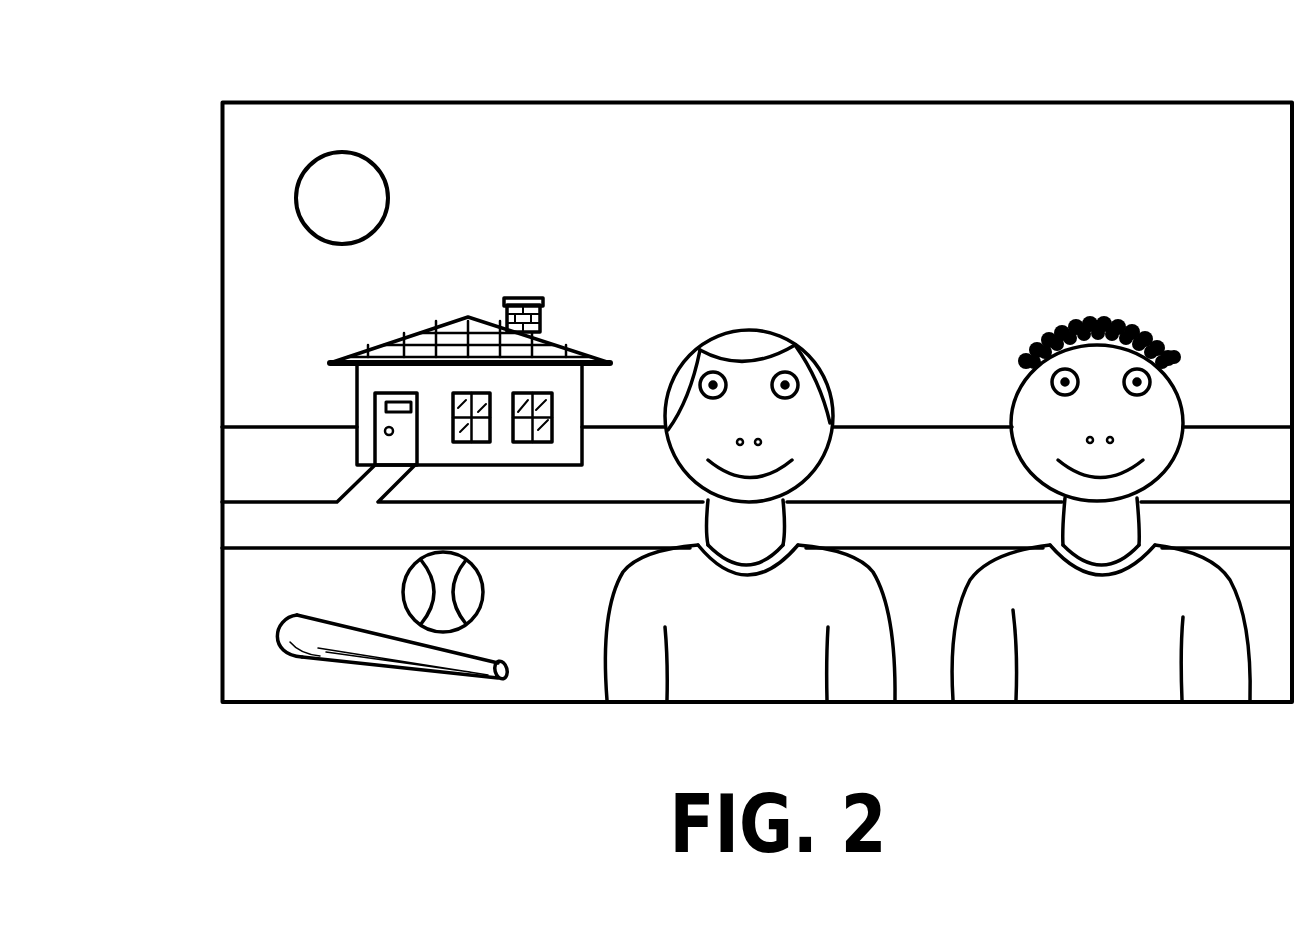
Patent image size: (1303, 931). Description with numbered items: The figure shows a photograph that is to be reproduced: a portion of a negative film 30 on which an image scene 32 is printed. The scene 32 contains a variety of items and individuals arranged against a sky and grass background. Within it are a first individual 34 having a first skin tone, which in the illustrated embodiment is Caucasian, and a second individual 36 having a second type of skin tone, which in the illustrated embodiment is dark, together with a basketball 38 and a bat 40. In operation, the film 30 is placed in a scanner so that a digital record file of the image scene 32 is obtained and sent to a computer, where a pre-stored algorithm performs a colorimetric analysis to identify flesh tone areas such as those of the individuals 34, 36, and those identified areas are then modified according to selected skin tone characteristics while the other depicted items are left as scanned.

The negative film 30 is at (997, 102).
The image scene 32 is at (803, 130).
The first individual 34 is at (745, 328).
The second individual 36 is at (1093, 322).
The basketball 38 is at (483, 588).
The bat 40 is at (307, 613).